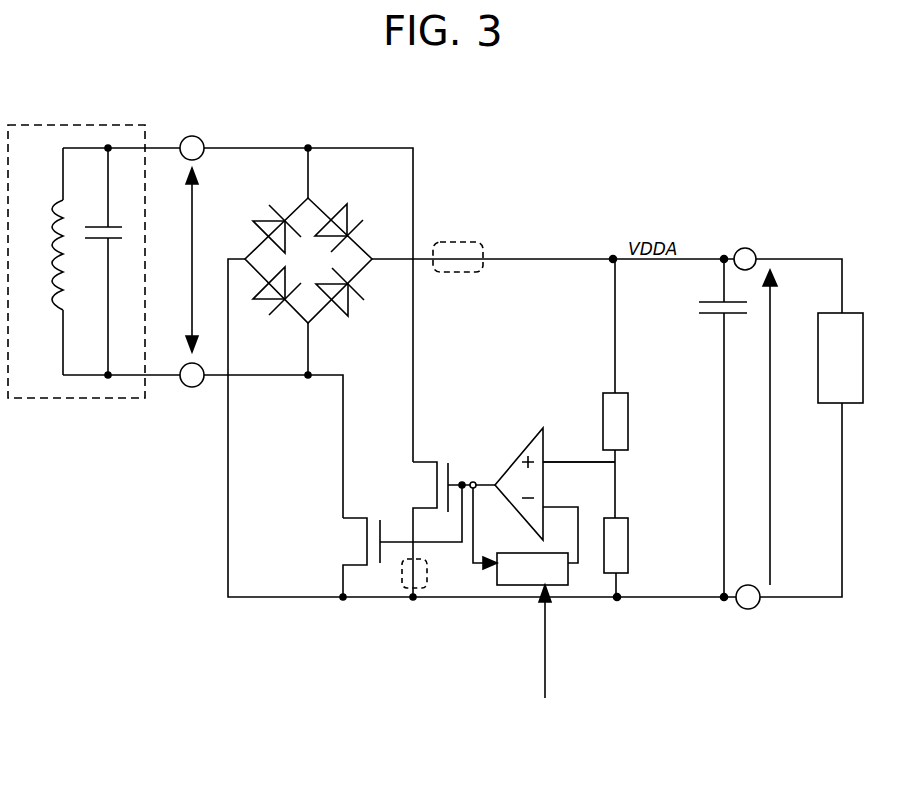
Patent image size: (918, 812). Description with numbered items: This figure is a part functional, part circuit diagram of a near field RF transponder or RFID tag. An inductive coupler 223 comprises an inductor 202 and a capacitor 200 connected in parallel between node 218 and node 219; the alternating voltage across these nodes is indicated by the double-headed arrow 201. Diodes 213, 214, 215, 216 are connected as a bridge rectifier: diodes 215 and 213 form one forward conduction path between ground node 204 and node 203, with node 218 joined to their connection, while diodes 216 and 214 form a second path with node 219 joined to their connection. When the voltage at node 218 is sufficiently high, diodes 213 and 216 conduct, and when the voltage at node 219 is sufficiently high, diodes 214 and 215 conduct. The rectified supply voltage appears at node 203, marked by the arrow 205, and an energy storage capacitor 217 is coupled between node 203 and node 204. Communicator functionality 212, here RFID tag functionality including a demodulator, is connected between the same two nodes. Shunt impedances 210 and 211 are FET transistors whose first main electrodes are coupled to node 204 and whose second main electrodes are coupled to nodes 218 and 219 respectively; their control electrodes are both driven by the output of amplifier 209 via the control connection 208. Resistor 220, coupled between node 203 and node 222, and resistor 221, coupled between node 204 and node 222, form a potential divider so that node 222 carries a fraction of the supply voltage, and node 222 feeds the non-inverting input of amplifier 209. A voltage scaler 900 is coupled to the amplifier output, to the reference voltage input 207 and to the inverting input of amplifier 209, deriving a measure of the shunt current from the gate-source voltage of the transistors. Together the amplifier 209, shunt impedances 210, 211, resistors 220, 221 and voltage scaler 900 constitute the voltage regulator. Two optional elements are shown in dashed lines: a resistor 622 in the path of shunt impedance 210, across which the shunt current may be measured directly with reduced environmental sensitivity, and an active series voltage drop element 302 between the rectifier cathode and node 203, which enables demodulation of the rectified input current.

The capacitor 200 is at (122, 240).
The AC voltage indication arrow 201 is at (193, 203).
The inductor 202 is at (43, 222).
The node 203 is at (735, 248).
The node 204 is at (760, 607).
The output voltage arrow 205 is at (782, 290).
The reference voltage Vref 207 is at (580, 712).
The control signal 208 is at (484, 486).
The amplifier 209 is at (524, 478).
The shunt impedance 210 is at (435, 460).
The shunt impedance 211 is at (347, 554).
The communicator functionality 212 is at (830, 405).
The diode 213 is at (353, 217).
The diode 214 is at (357, 312).
The diode 215 is at (263, 217).
The diode 216 is at (262, 317).
The capacitor 217 is at (717, 312).
The node 218 is at (192, 135).
The node 219 is at (188, 390).
The resistor 220 is at (603, 405).
The resistor 221 is at (607, 573).
The node 222 is at (618, 462).
The inductive coupler 223 is at (40, 399).
The active series voltage drop element 302 is at (462, 236).
The resistor 622 is at (395, 580).
The voltage scaler 900 is at (520, 538).